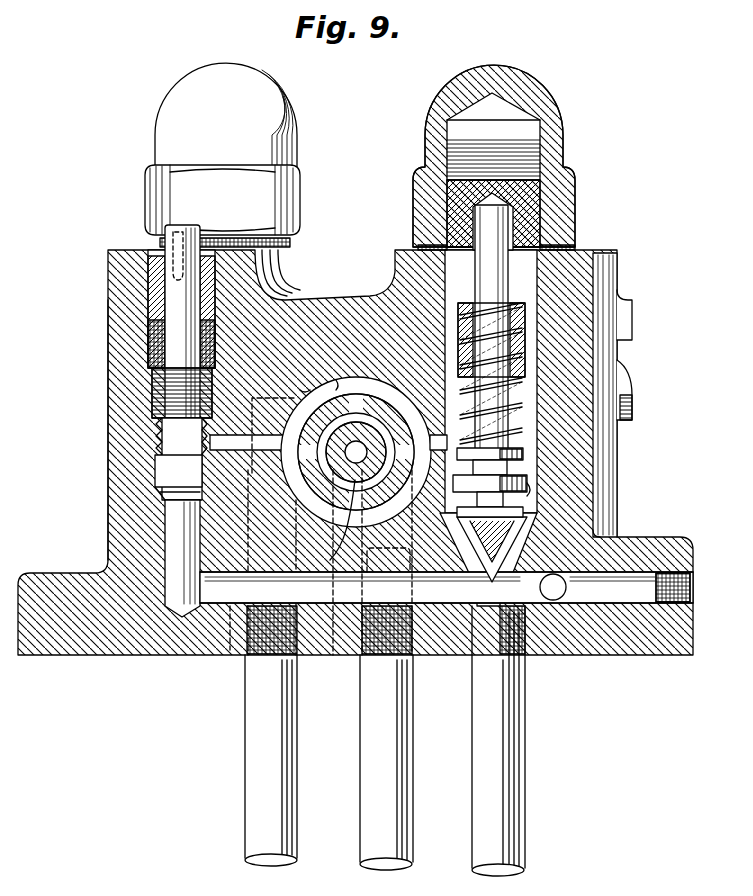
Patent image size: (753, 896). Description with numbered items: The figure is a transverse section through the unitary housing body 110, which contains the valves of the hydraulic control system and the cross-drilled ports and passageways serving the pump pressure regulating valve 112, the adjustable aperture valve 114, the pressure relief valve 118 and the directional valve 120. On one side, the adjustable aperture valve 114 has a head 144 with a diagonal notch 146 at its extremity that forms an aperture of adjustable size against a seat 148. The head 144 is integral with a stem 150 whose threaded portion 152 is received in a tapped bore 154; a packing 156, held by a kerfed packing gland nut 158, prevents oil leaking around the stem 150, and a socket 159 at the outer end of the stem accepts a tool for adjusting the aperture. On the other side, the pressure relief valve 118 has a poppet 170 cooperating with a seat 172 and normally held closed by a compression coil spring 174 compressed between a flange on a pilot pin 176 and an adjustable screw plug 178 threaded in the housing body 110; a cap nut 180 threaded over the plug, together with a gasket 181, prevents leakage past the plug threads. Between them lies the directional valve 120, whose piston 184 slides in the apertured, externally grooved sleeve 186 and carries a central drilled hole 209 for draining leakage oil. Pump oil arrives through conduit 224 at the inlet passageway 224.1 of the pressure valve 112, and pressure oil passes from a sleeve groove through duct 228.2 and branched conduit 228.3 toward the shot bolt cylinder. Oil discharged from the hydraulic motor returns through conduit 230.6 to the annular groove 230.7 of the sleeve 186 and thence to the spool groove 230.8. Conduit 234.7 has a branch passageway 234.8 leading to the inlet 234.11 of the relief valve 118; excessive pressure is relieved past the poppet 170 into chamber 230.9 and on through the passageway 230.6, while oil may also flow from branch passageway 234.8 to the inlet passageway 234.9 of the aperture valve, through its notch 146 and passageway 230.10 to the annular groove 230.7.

The housing body 110 is at (585, 312).
The pump pressure regulating valve 112 is at (165, 95).
The adjustable aperture valve 114 is at (104, 358).
The pressure relief valve 118 is at (638, 136).
The directional valve 120 is at (372, 288).
The head 144 is at (178, 478).
The diagonal notch 146 is at (165, 515).
The seat 148 is at (165, 497).
The stem 150 is at (157, 275).
The threaded portion 152 is at (163, 395).
The tapped bore 154 is at (152, 440).
The packing 156 is at (152, 322).
The kerfed packing gland nut 158 is at (180, 290).
The socket 159 is at (168, 238).
The poppet 170 is at (530, 522).
The seat 172 is at (522, 530).
The compression coil spring 174 is at (520, 413).
The pilot pin 176 is at (498, 362).
The adjustable screw plug 178 is at (533, 281).
The cap nut 180 is at (566, 112).
The gasket 181 is at (565, 250).
The piston 184 is at (350, 478).
The sleeve 186 is at (402, 388).
The central drilled hole 209 is at (330, 560).
The conduit 224 is at (262, 780).
The inlet passageway 224.1 is at (255, 536).
The duct 228.2 is at (395, 590).
The branched conduit 228.3 is at (397, 798).
The conduit 230.6 is at (414, 552).
The annular groove 230.7 is at (337, 378).
The spool groove 230.8 is at (300, 388).
The chamber 230.9 is at (533, 490).
The passageway 230.10 is at (293, 400).
The conduit 234.7 is at (505, 753).
The branch passageway 234.8 is at (234, 590).
The inlet passageway 234.9 is at (175, 549).
The inlet 234.11 is at (520, 554).